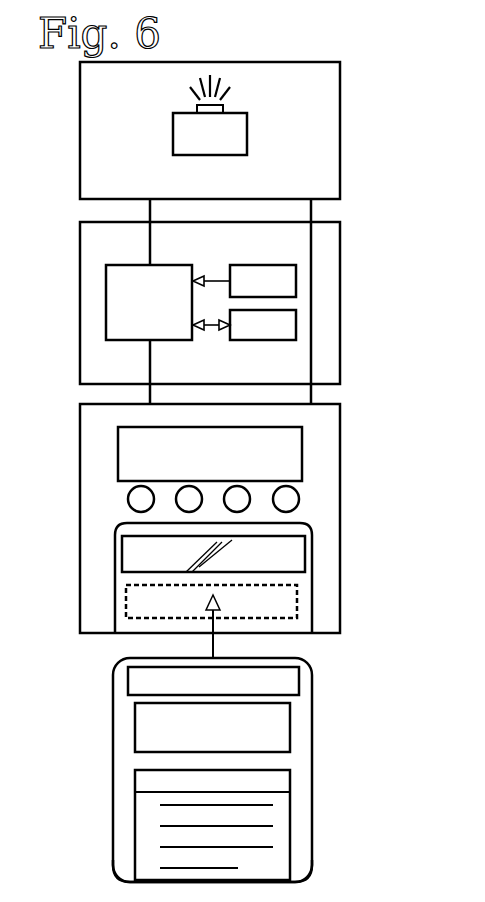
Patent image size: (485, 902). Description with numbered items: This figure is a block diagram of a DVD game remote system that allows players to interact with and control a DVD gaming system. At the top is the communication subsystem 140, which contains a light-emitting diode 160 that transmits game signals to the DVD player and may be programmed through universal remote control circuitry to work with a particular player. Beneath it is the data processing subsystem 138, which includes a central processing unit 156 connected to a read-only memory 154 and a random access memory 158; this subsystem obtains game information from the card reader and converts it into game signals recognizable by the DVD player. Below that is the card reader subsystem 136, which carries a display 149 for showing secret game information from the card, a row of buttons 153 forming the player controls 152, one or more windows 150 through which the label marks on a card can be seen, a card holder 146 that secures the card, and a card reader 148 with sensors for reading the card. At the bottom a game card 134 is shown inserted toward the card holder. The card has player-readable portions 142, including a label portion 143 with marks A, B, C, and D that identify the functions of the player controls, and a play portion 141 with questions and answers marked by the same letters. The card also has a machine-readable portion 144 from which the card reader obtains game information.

The communication subsystem 140 is at (340, 147).
The light-emitting diode 160 is at (231, 149).
The data processing subsystem 138 is at (340, 266).
The central processing unit 156 is at (170, 319).
The read-only memory 154 is at (284, 298).
The random access memory 158 is at (284, 342).
The card reader subsystem 136 is at (340, 450).
The display 149 is at (146, 453).
The buttons 153 is at (189, 487).
The player controls 152 is at (237, 487).
The windows 150 is at (295, 549).
The card holder 146 is at (120, 580).
The card reader 148 is at (297, 598).
The game card 134 is at (312, 786).
The player-readable portion 142 is at (297, 681).
The label portion 143 is at (133, 690).
The machine-readable portion 144 is at (292, 722).
The play portion 141 is at (275, 868).